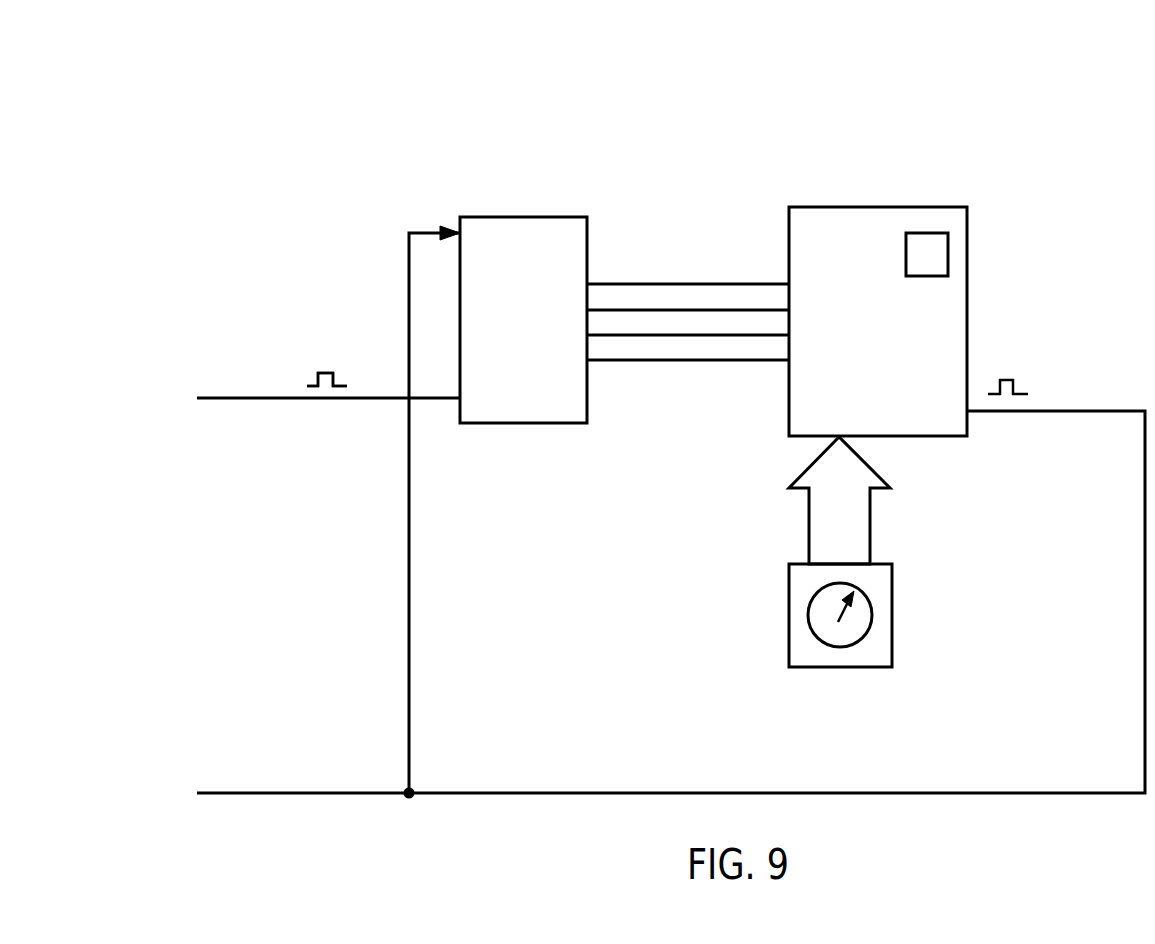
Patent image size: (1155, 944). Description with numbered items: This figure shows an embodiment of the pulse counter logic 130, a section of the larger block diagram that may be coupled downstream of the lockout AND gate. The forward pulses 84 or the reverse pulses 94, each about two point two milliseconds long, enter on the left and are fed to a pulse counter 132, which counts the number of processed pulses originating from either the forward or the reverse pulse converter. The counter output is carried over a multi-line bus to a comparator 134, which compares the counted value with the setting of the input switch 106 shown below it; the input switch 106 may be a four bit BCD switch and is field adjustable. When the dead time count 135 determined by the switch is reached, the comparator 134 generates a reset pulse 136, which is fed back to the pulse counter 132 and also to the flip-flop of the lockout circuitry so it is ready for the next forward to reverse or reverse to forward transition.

The pulse counter logic 130 is at (722, 143).
The pulse counter 132 is at (528, 217).
The comparator 134 is at (887, 207).
The dead time count 135 is at (948, 255).
The reset pulse 136 is at (412, 263).
The forward pulses 84 is at (332, 372).
The reverse pulses 94 is at (327, 379).
The input switch 106 is at (892, 649).